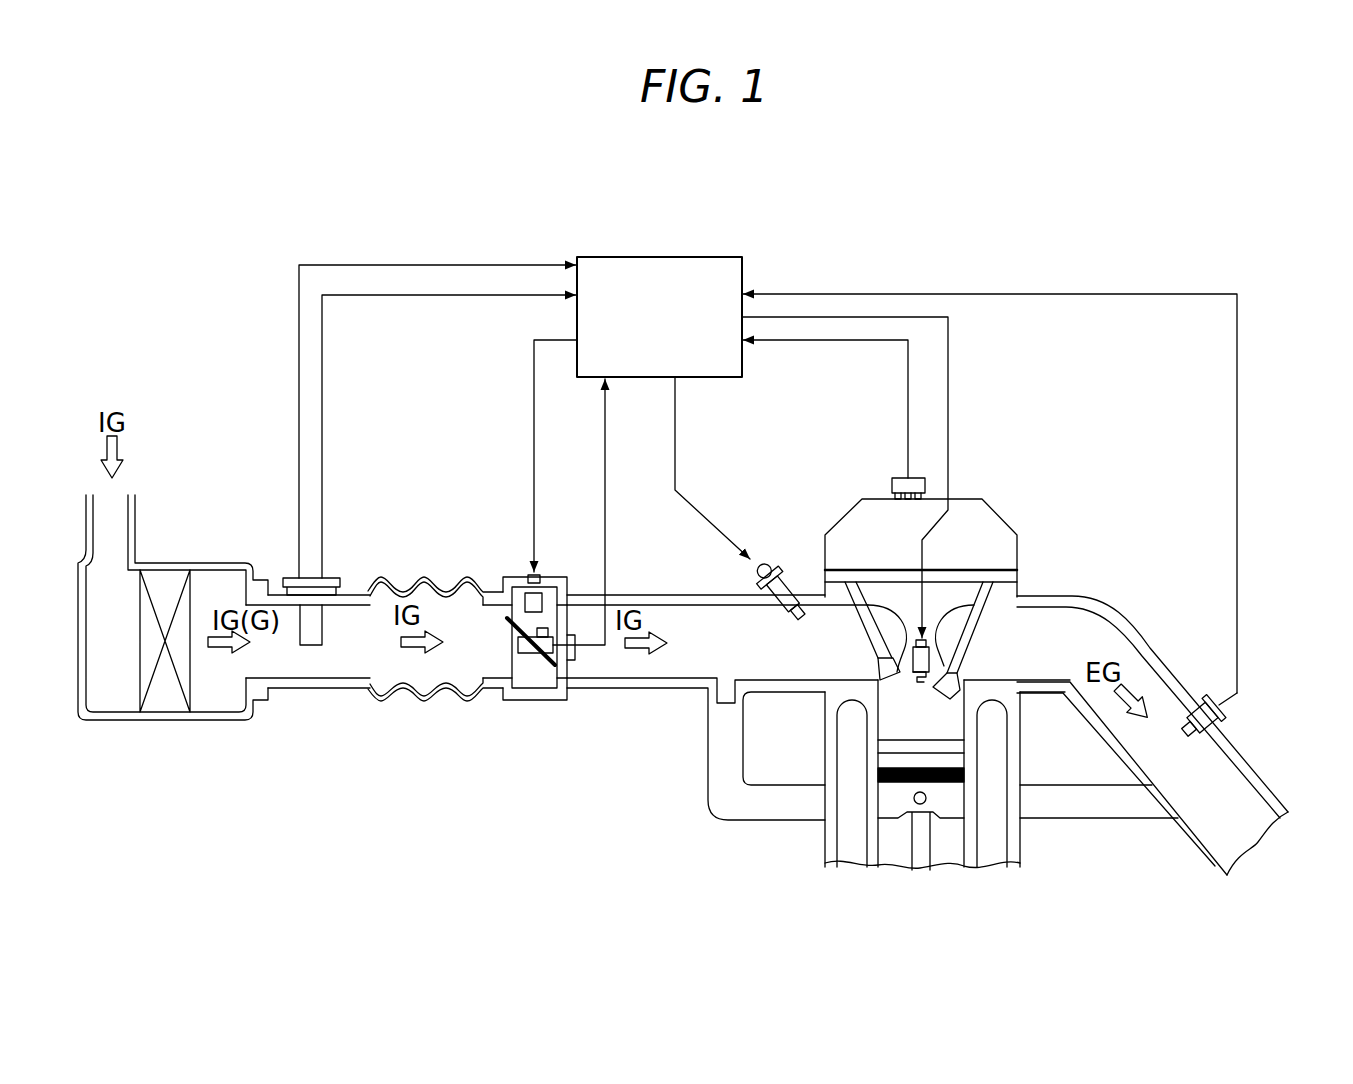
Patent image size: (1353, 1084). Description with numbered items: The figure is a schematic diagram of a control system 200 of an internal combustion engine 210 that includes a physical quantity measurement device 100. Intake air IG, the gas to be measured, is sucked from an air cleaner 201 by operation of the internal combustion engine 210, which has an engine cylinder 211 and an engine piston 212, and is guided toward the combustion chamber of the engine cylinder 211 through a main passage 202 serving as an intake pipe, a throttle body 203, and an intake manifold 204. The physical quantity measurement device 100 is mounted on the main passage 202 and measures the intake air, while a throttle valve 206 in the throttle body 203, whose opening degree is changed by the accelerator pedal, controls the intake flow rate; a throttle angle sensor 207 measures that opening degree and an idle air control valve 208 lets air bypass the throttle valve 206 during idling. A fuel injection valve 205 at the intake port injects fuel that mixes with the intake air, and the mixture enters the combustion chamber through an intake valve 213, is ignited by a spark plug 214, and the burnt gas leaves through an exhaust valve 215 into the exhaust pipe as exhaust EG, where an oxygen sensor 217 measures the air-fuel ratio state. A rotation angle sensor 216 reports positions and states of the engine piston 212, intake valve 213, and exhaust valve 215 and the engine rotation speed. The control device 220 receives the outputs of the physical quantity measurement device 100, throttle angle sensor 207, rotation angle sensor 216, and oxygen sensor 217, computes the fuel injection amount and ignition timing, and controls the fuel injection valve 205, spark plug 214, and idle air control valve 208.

The physical quantity measurement device 100 is at (342, 576).
The control system 200 is at (1052, 186).
The air cleaner 201 is at (166, 710).
The main passage 202 is at (316, 683).
The throttle body 203 is at (518, 680).
The intake manifold 204 is at (667, 683).
The fuel injection valve 205 is at (767, 560).
The throttle valve 206 is at (540, 664).
The throttle angle sensor 207 is at (556, 637).
The idle air control valve 208 is at (526, 578).
The internal combustion engine 210 is at (1011, 500).
The engine cylinder 211 is at (906, 722).
The engine piston 212 is at (947, 800).
The intake valve 213 is at (870, 577).
The spark plug 214 is at (916, 686).
The exhaust valve 215 is at (972, 640).
The rotation angle sensor 216 is at (900, 477).
The oxygen sensor 217 is at (1232, 712).
The control device 220 is at (737, 257).